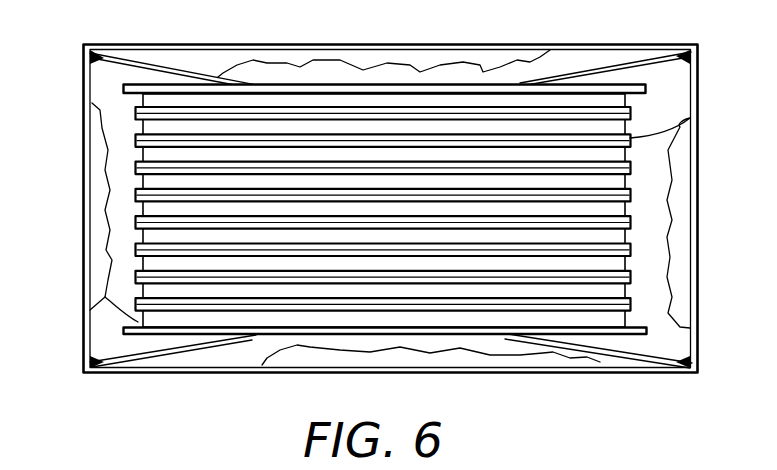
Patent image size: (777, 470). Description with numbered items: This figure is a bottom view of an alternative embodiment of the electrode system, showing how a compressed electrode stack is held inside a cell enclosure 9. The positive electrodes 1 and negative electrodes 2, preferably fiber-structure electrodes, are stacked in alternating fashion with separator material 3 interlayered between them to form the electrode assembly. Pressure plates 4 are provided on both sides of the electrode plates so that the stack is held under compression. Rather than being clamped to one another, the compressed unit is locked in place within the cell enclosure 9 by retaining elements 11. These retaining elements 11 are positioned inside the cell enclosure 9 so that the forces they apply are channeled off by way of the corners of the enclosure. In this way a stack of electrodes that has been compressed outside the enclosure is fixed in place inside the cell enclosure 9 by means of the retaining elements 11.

The positive electrodes 1 is at (137, 127).
The negative electrodes 2 is at (135, 104).
The separator material 3 is at (630, 110).
The pressure plates 4 is at (600, 82).
The cell enclosure 9 is at (693, 90).
The retaining elements 11 is at (253, 62).